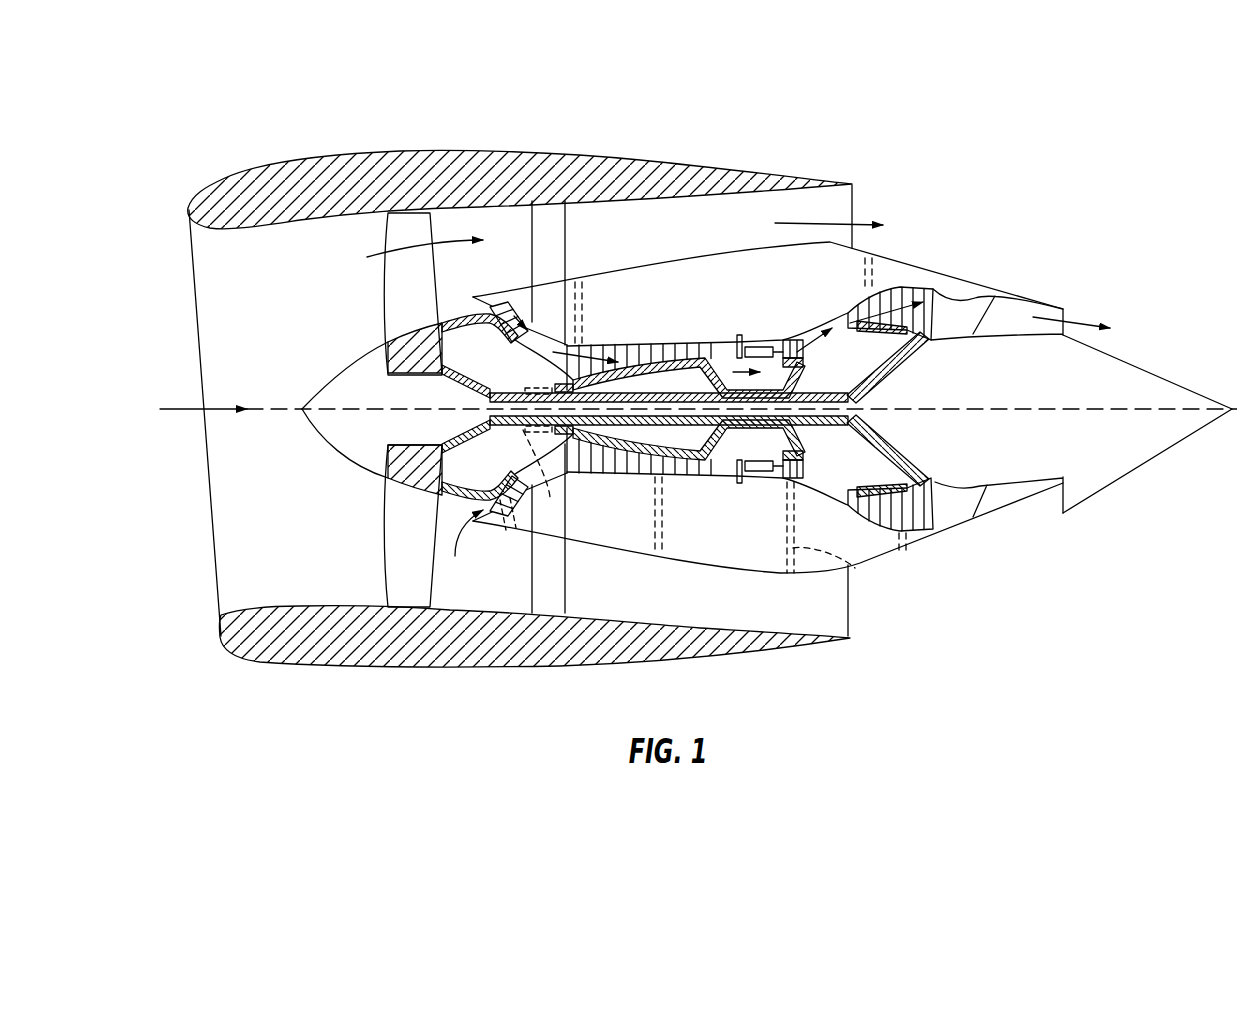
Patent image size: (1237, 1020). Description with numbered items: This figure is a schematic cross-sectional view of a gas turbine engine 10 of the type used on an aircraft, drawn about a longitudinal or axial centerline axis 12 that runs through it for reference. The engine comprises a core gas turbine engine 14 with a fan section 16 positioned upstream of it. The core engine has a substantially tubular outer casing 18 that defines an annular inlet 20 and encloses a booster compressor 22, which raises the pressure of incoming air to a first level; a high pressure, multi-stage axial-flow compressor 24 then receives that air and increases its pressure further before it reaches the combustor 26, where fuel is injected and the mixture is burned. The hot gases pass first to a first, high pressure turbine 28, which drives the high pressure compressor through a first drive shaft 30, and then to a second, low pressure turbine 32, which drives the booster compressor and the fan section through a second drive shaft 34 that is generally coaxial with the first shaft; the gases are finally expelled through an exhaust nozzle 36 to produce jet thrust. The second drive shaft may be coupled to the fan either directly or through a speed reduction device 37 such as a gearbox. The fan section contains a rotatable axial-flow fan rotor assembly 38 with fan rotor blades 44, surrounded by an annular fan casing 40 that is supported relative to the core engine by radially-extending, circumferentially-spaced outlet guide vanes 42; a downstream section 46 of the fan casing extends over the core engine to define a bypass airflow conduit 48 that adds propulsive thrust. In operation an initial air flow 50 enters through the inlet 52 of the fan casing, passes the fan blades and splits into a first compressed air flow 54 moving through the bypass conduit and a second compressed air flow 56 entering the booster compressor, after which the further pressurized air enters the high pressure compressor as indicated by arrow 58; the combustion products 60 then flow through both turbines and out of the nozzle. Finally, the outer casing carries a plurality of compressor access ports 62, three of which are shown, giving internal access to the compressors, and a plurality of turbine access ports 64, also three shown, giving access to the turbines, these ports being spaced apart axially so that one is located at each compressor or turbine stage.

The gas turbine engine 10 is at (698, 407).
The longitudinal or axial centerline axis 12 is at (1005, 404).
The core gas turbine engine 14 is at (713, 288).
The fan section 16 is at (420, 137).
The outer casing 18 is at (717, 568).
The annular inlet 20 is at (507, 531).
The booster compressor 22 is at (526, 492).
The high pressure compressor 24 is at (595, 470).
The combustor 26 is at (757, 472).
The first (high pressure) turbine 28 is at (828, 472).
The first (high pressure) drive shaft 30 is at (796, 377).
The second (low pressure) turbine 32 is at (930, 535).
The second (low pressure) drive shaft 34 is at (537, 388).
The exhaust nozzle 36 is at (1063, 313).
The speed reduction device 37 is at (530, 516).
The fan rotor assembly 38 is at (440, 374).
The fan casing 40 is at (425, 662).
The outlet guide vanes 42 is at (568, 212).
The fan rotor blades 44 is at (388, 560).
The downstream section 46 is at (766, 170).
The airflow conduit 48 is at (696, 232).
The initial air flow 50 is at (218, 403).
The inlet 52 is at (217, 614).
The first compressed air flow 54 is at (402, 247).
The second compressed air flow 56 is at (463, 312).
The air flow entering the high pressure compressor 58 is at (593, 358).
The combustion products 60 is at (803, 334).
The compressor access ports 62 is at (590, 303).
The turbine access ports 64 is at (880, 272).